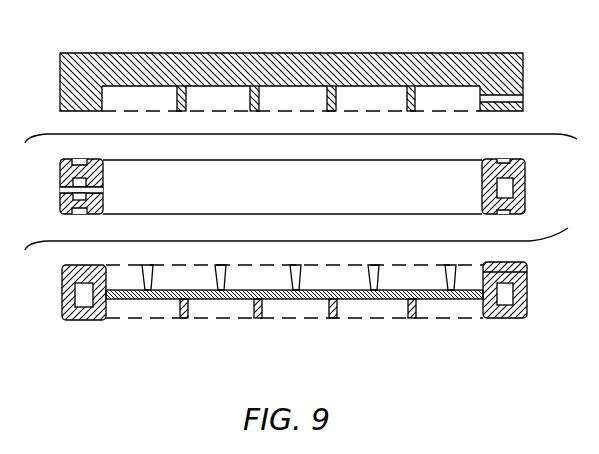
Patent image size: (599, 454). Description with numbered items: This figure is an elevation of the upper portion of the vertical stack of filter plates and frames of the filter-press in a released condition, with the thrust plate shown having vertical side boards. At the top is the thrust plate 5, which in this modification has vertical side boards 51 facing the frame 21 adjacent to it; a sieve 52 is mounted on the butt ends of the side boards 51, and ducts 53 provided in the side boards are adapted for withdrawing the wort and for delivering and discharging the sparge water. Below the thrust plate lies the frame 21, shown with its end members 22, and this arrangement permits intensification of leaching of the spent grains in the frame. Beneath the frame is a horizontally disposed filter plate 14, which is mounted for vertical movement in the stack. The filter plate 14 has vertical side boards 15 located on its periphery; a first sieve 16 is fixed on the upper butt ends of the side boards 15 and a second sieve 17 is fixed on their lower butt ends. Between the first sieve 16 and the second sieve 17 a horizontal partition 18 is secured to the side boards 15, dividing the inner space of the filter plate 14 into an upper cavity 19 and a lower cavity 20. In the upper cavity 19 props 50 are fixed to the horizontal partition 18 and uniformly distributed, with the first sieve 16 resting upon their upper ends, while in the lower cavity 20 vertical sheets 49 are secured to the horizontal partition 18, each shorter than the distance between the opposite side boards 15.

The upper frame part 5 is at (377, 65).
The vertical side boards 51 is at (87, 100).
The sieve 52 is at (233, 110).
The ducts 53 is at (497, 95).
The frame 21 is at (61, 173).
The right spacer block 22 is at (527, 134).
The filter plate 14 is at (517, 323).
The vertical side boards 15 is at (82, 317).
The first sieve 16 is at (168, 268).
The second sieve 17 is at (210, 318).
The horizontal partition 18 is at (278, 300).
The upper cavity 19 is at (345, 278).
The lower cavity 20 is at (383, 306).
The vertical sheets 49 is at (418, 307).
The props 50 is at (455, 298).